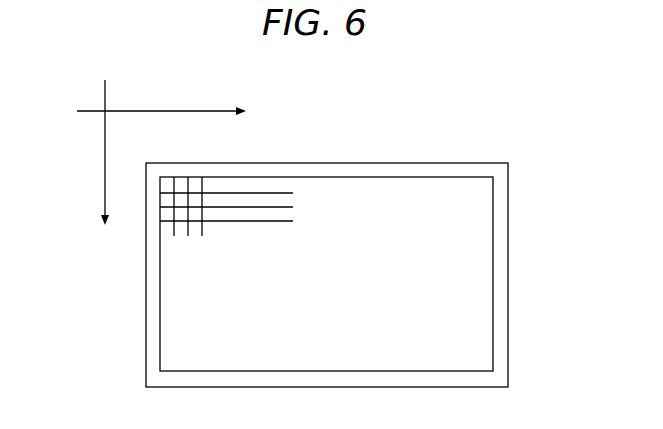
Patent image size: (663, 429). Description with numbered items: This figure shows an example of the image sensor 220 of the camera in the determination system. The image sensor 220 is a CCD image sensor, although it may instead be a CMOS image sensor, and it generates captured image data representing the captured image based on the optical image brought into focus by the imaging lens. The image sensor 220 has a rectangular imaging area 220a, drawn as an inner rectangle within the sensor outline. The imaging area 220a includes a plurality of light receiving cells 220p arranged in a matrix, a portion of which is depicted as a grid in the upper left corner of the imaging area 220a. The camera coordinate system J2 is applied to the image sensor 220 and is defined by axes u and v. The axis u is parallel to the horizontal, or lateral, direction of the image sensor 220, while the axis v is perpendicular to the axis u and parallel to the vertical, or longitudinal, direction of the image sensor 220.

The camera coordinate system J2 is at (80, 96).
The image sensor 220 is at (510, 178).
The imaging area 220a is at (364, 177).
The light receiving cells 220p is at (164, 187).